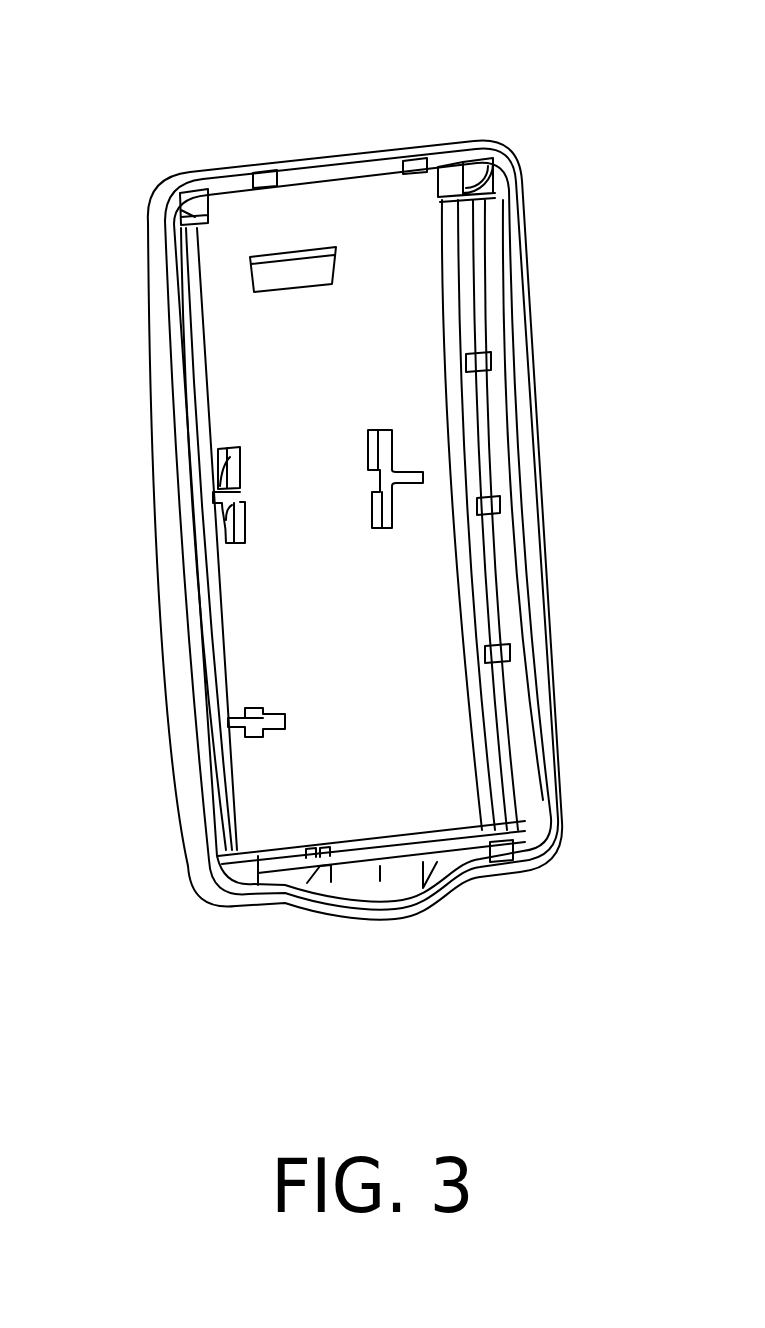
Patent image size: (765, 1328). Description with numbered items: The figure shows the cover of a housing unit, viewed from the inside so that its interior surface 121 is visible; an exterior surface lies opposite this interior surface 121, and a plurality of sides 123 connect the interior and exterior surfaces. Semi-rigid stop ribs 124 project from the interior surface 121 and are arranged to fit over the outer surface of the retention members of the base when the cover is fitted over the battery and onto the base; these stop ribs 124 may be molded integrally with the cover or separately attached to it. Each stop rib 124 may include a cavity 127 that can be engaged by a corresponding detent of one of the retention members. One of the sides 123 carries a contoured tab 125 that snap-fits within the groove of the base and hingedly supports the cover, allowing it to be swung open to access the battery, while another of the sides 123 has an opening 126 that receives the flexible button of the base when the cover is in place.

The interior surface 121 is at (375, 786).
The sides 123 is at (218, 163).
The stop ribs 124 is at (245, 525).
The contoured tab 125 is at (367, 170).
The opening 126 is at (408, 848).
The cavity 127 is at (378, 472).